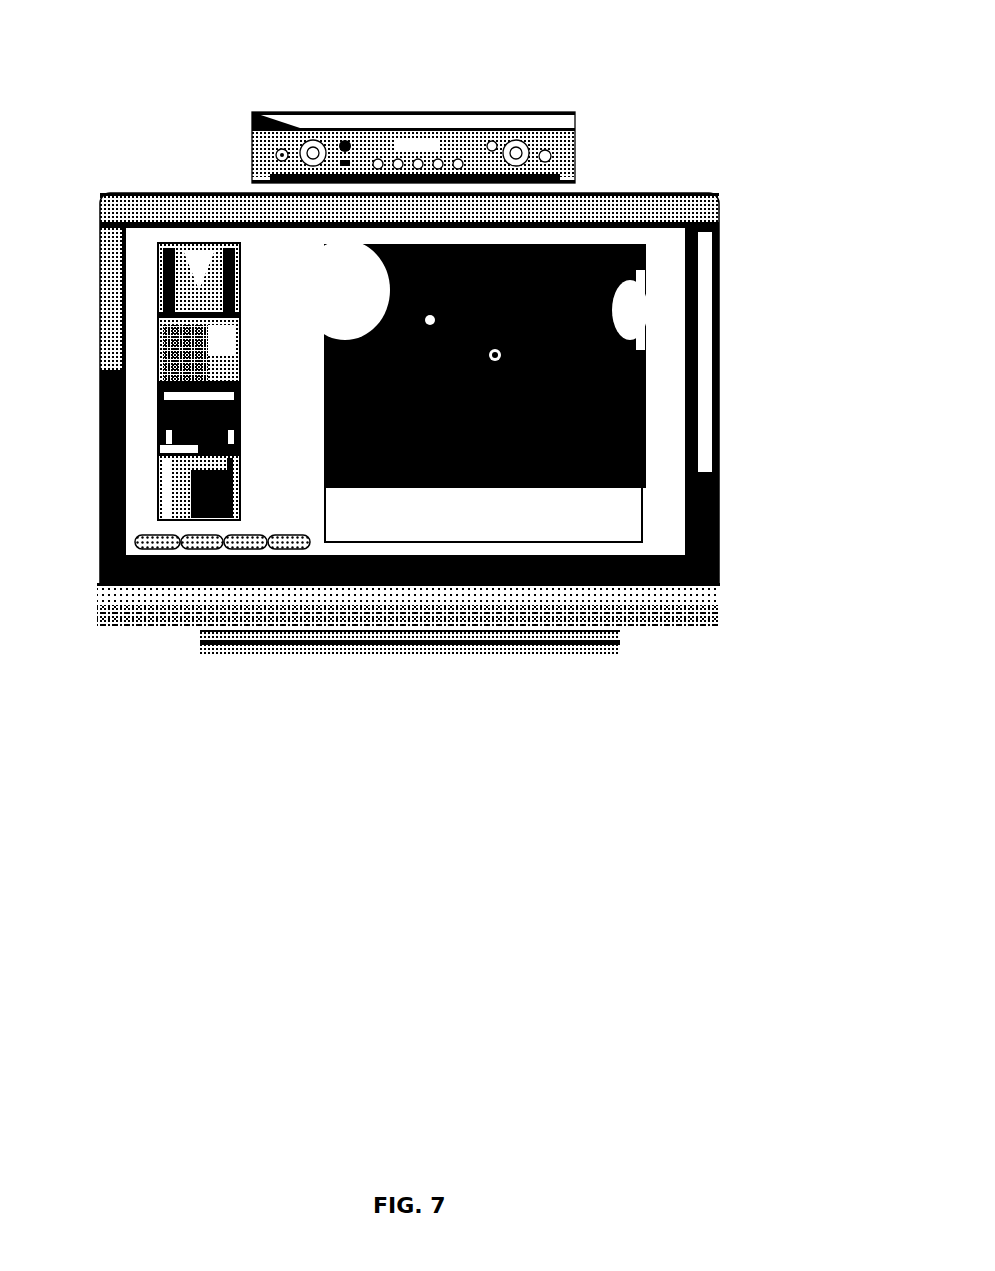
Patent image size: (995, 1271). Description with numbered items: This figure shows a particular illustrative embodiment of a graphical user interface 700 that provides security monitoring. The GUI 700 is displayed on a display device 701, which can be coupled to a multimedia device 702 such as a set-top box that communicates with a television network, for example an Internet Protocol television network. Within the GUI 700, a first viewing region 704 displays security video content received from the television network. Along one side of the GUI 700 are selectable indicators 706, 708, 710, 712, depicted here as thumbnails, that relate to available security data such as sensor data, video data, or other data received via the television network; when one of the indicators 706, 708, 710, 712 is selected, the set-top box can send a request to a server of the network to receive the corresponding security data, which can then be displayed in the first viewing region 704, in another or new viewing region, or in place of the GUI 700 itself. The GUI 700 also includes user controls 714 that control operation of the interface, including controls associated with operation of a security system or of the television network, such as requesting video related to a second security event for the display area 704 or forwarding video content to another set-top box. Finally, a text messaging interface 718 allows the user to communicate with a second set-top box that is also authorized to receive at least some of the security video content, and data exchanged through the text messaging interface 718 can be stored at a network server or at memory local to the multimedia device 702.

The graphical user interface 700 is at (228, 207).
The display device 701 is at (118, 182).
The multimedia device 702 is at (357, 112).
The first viewing region 704 is at (608, 235).
The selectable indicator 706 is at (150, 262).
The selectable indicator 708 is at (150, 333).
The selectable indicator 710 is at (150, 403).
The selectable indicator 712 is at (150, 473).
The user controls 714 is at (168, 549).
The text messaging interface 718 is at (612, 545).